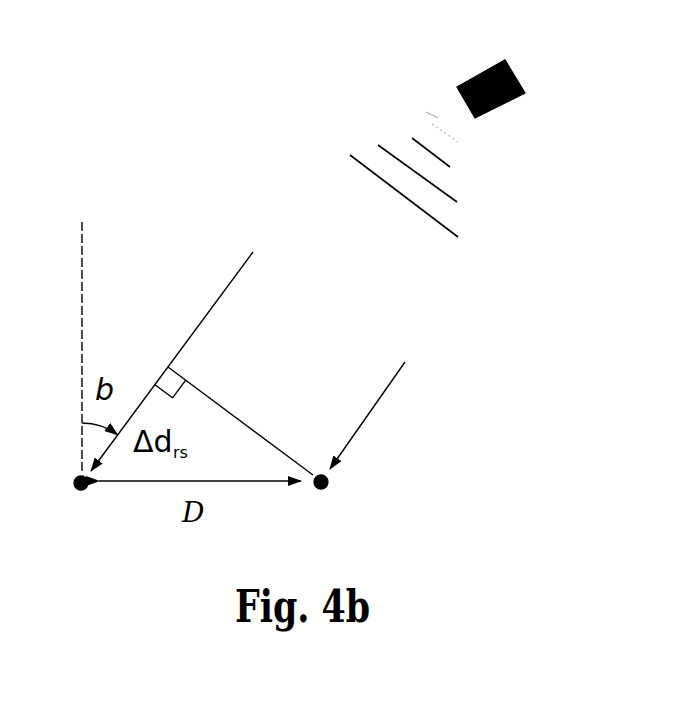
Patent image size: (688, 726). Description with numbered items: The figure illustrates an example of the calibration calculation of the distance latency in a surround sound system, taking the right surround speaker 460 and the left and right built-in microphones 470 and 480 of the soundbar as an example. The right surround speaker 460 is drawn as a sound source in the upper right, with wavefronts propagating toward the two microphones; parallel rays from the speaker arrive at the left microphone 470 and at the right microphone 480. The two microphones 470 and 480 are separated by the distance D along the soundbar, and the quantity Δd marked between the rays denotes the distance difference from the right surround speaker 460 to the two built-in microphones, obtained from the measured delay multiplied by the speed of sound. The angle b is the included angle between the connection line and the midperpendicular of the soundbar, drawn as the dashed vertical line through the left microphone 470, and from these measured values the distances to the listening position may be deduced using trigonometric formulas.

The right surround speaker 460 is at (474, 77).
The left microphone 470 is at (57, 505).
The right microphone 480 is at (344, 505).